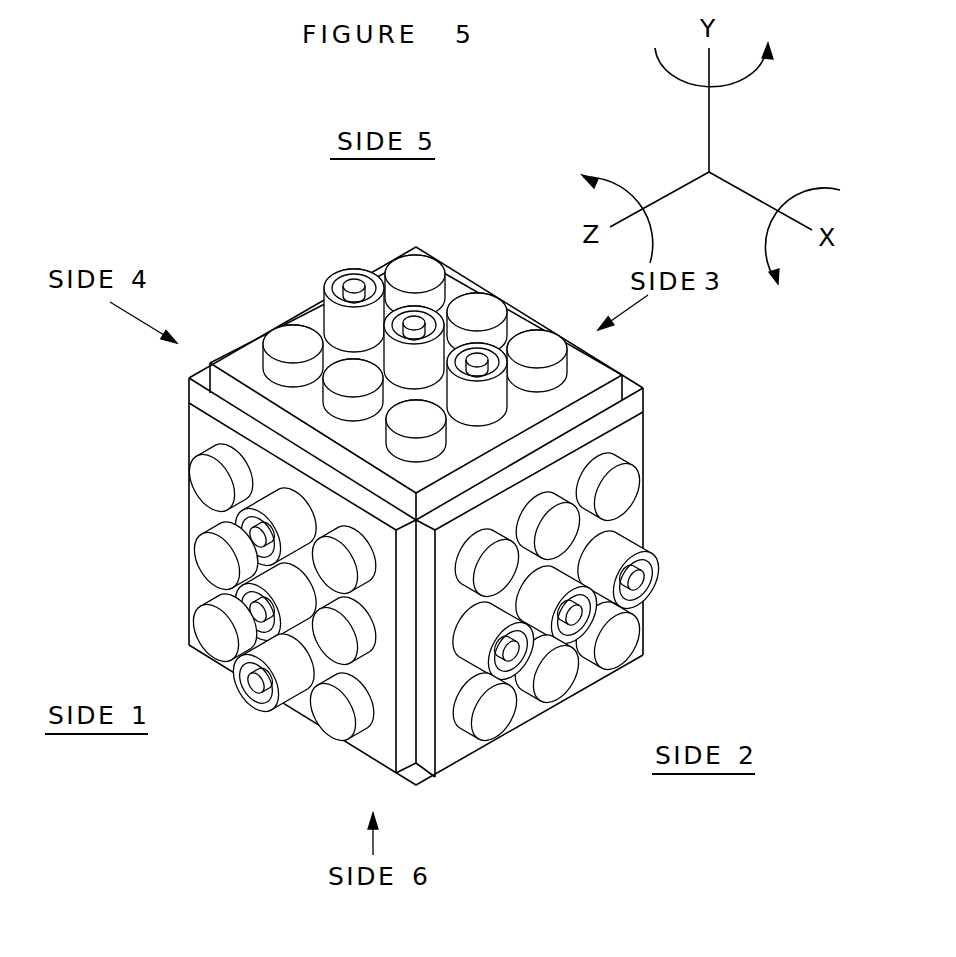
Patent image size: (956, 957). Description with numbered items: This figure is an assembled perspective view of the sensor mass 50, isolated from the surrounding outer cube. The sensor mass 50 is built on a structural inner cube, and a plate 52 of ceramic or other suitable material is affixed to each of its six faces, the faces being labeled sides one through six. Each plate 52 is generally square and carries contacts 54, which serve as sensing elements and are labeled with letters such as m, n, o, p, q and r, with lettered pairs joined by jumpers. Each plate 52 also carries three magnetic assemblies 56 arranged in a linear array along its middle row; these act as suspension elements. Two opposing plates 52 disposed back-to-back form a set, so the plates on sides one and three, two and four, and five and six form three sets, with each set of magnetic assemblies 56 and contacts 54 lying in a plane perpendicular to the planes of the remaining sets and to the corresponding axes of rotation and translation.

The sensor mass 50 is at (183, 172).
The plate 52 is at (585, 375).
The contact 54 is at (420, 268).
The magnetic assembly 56 is at (343, 272).